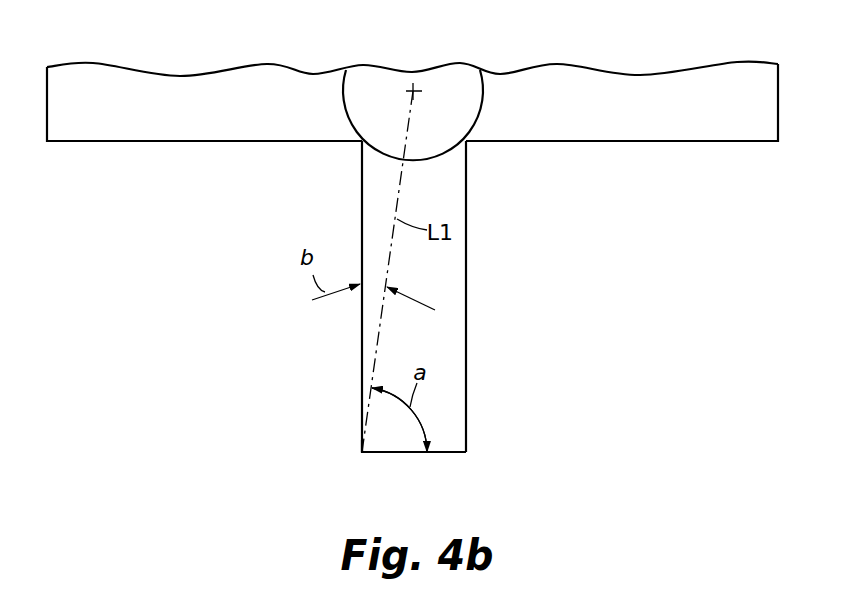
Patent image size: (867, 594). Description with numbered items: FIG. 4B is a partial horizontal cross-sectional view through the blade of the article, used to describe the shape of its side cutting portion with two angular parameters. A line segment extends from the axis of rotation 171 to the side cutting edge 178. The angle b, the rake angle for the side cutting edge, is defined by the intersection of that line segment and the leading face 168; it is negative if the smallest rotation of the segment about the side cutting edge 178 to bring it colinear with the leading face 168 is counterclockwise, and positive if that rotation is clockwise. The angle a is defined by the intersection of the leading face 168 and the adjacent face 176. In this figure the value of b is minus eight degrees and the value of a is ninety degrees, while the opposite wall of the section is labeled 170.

The leading face 168 is at (360, 202).
The second side wall of slot 170 is at (466, 336).
The axis of rotation 171 is at (413, 91).
The adjacent face 176 is at (446, 453).
The side cutting edge 178 is at (361, 454).